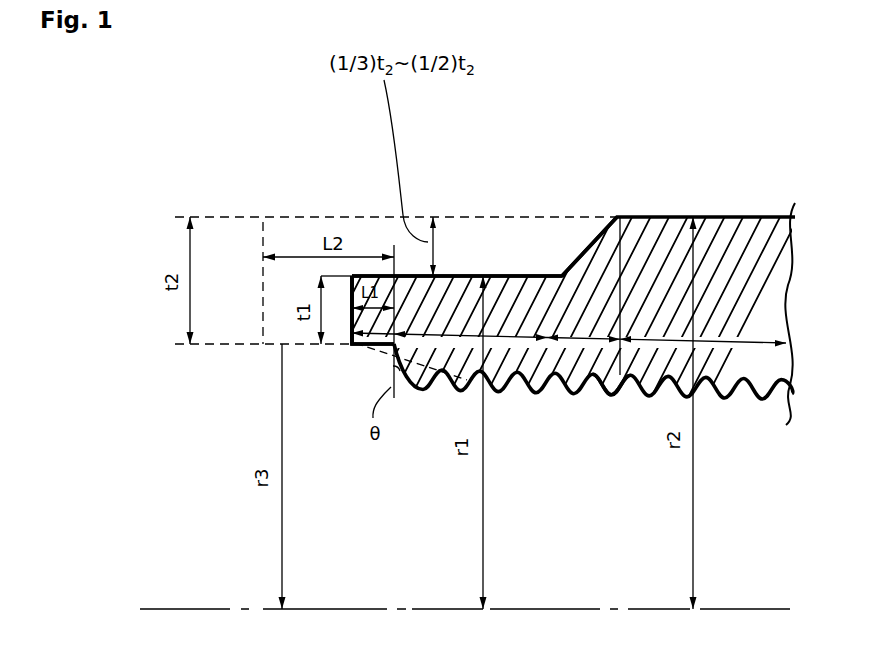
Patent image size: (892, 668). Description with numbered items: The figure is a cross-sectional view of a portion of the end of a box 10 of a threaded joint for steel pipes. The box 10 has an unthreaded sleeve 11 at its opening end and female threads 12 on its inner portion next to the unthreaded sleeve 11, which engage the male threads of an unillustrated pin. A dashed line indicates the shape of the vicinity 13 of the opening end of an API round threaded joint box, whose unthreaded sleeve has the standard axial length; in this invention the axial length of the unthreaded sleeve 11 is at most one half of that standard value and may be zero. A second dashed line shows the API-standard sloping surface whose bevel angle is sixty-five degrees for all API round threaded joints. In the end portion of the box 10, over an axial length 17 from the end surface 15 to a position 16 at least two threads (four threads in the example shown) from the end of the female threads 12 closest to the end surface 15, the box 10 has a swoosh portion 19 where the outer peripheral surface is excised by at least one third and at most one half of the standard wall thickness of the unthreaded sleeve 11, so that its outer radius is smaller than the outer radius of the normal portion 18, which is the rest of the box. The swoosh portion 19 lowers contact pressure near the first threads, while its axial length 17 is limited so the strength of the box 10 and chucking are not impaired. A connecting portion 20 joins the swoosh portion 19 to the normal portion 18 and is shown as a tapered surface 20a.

The box 10 is at (664, 174).
The unthreaded sleeve 11 is at (372, 344).
The female threads 12 is at (612, 399).
The vicinity of the opening end 13 is at (337, 216).
The end surface 15 is at (350, 324).
The position 16 is at (555, 378).
The axial length 17 is at (470, 325).
The normal portion 18 is at (703, 333).
The swoosh portion 19 is at (465, 273).
The connecting portion 20 is at (583, 327).
The tapered surface 20a is at (590, 240).